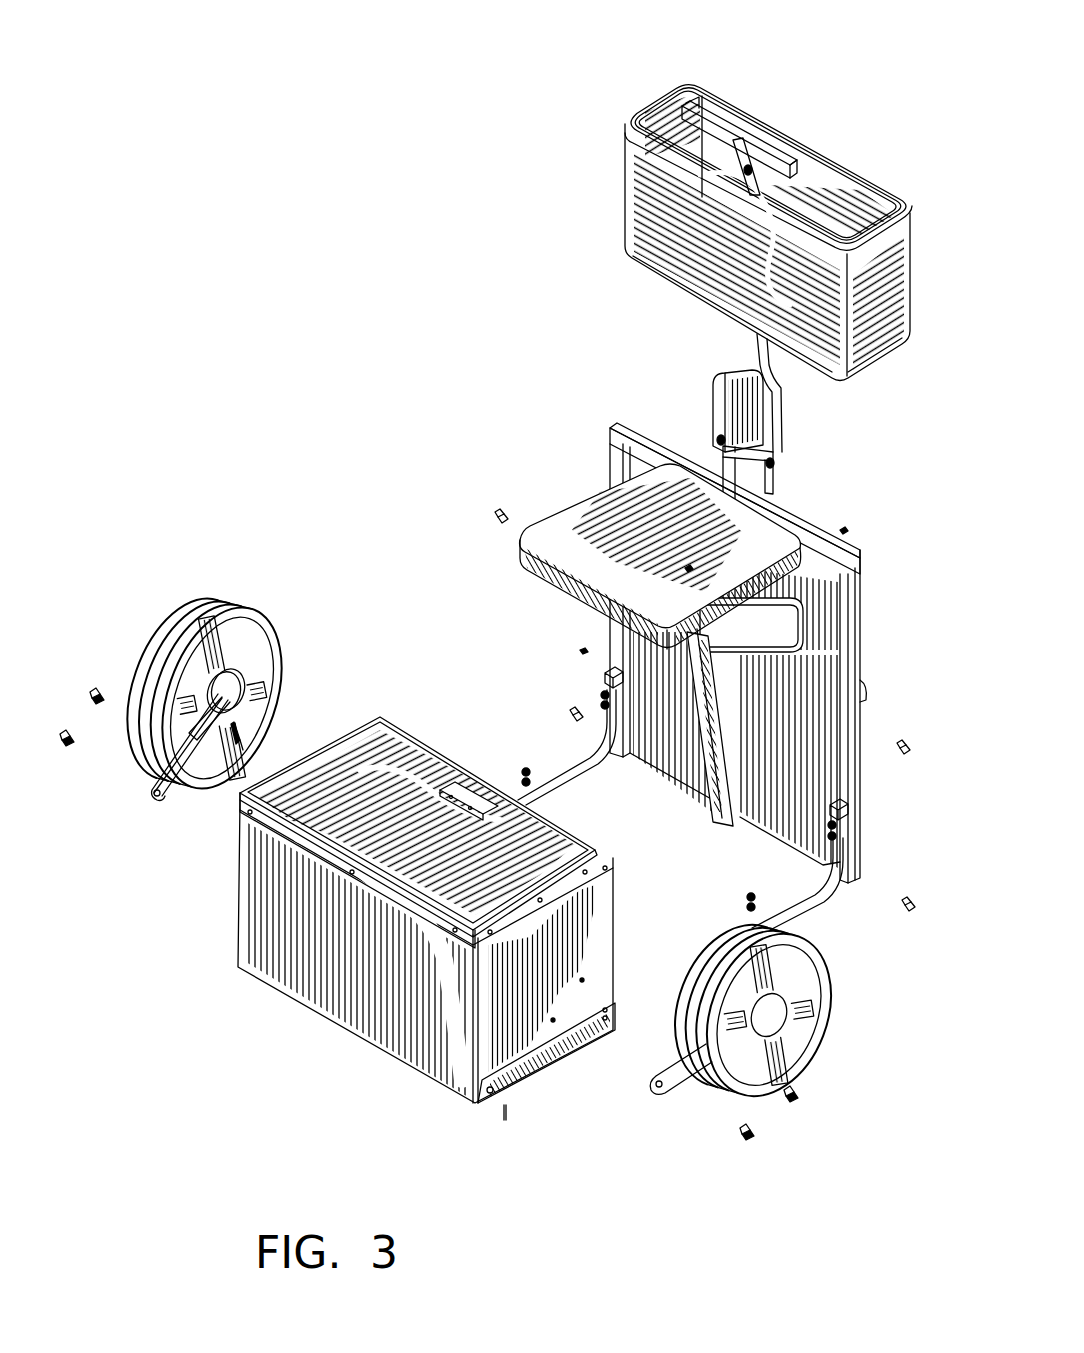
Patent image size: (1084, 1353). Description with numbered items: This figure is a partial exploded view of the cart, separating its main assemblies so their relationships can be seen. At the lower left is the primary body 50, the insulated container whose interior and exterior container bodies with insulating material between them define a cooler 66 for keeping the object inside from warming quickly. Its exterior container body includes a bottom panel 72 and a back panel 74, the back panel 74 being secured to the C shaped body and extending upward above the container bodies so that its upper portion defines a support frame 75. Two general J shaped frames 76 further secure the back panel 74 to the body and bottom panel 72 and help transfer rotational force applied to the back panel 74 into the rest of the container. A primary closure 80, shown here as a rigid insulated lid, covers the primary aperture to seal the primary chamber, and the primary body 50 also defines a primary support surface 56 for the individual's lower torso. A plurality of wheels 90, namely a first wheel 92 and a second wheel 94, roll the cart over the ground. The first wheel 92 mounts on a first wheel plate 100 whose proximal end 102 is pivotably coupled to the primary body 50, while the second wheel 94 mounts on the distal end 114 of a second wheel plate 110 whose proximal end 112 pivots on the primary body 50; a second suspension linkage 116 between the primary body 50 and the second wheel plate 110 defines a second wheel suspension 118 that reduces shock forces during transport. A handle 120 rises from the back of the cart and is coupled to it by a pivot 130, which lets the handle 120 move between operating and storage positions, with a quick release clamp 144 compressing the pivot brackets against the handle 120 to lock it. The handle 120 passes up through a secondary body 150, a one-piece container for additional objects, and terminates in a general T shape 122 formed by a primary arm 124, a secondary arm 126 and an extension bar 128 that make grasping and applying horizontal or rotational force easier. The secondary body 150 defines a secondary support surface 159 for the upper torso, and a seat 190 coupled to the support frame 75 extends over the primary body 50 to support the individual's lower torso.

The primary body 50 is at (396, 892).
The primary support surface 56 is at (243, 830).
The cooler 66 is at (380, 1037).
The bottom panel 72 is at (553, 1050).
The back panel 74 is at (765, 653).
The support frame 75 is at (823, 673).
The general J shaped frames 76 is at (577, 753).
The primary closure 80 is at (337, 748).
The plurality of wheels 90 is at (477, 841).
The first wheel 92 is at (818, 1040).
The second wheel 94 is at (212, 606).
The first wheel plate 100 is at (682, 1108).
The proximal end 102 is at (656, 1096).
The second wheel plate 110 is at (135, 775).
The proximal end 112 is at (157, 802).
The distal end 114 is at (203, 676).
The second suspension linkage 116 is at (228, 706).
The second wheel suspension 118 is at (232, 728).
The handle 120 is at (781, 392).
The general T shape 122 is at (735, 130).
The primary arm 124 is at (777, 158).
The secondary arm 126 is at (700, 108).
The extension bar 128 is at (757, 188).
The pivot 130 is at (773, 460).
The quick release clamp 144 is at (775, 486).
The secondary body 150 is at (778, 215).
The secondary support surface 159 is at (678, 270).
The seat 190 is at (610, 494).